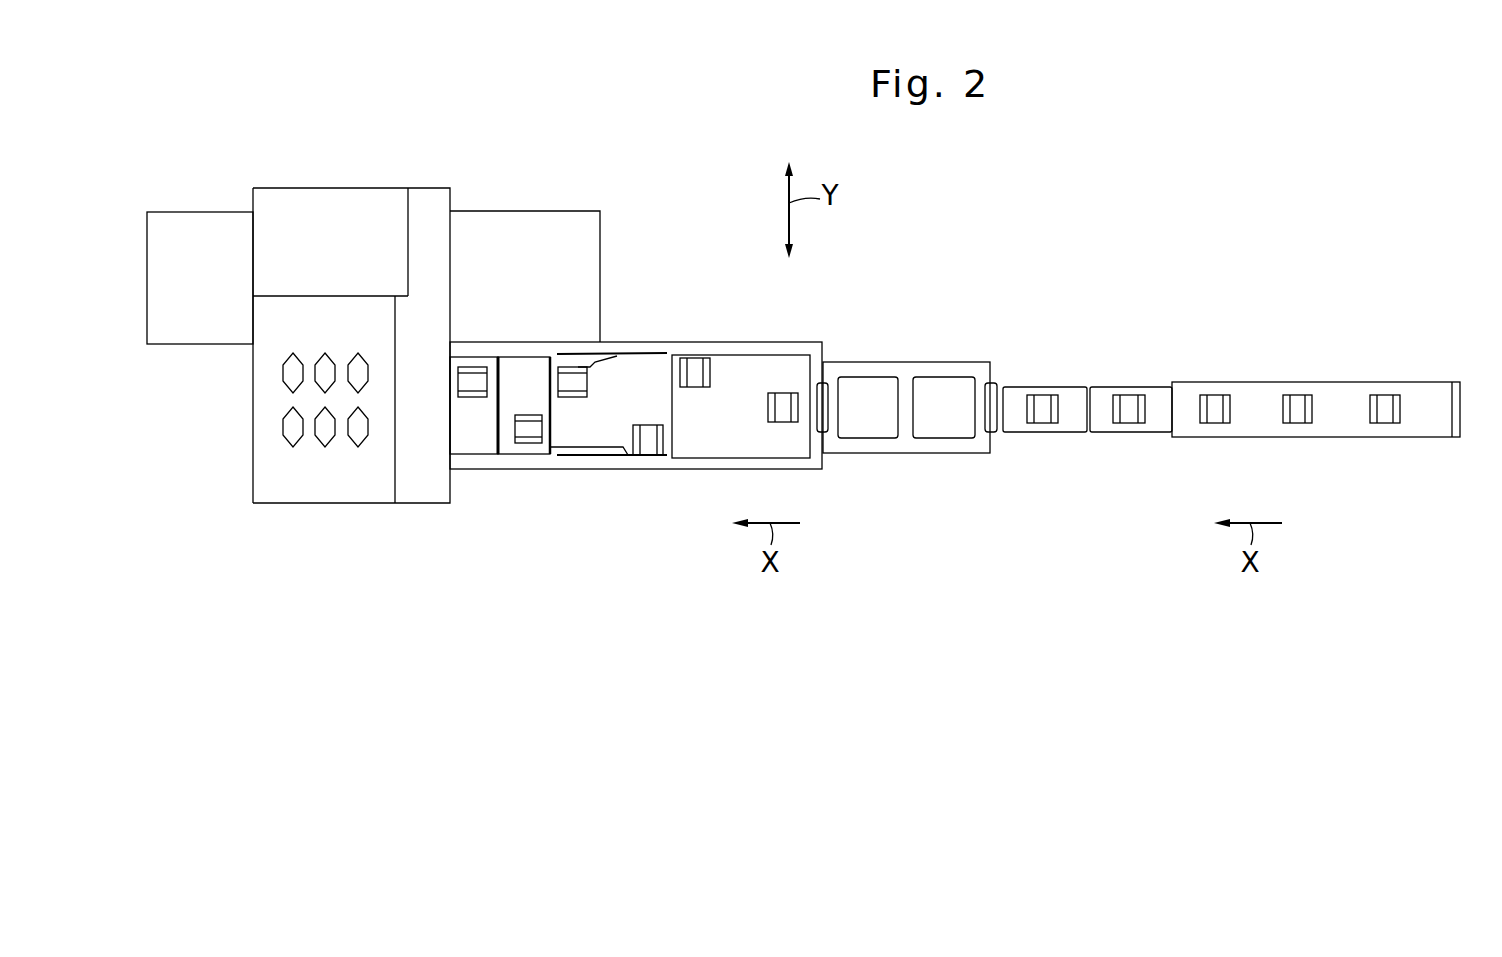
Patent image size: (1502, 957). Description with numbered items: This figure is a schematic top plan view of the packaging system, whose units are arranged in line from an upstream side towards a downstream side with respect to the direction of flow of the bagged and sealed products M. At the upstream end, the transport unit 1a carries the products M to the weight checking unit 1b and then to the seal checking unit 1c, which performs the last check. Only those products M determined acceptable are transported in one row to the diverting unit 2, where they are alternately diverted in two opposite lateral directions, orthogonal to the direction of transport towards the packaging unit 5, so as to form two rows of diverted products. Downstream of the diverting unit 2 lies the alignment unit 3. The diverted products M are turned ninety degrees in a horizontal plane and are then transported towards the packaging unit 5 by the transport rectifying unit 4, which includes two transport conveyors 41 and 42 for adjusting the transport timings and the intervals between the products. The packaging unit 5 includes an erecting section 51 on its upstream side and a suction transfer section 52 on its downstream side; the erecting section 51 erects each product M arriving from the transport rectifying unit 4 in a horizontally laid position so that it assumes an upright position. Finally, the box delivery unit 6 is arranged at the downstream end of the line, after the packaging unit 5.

The transport unit 1a is at (1278, 356).
The weight checking unit 1b is at (1120, 358).
The seal checking unit 1c is at (898, 352).
The diverting unit 2 is at (766, 334).
The alignment unit 3 is at (641, 333).
The transport rectifying unit 4 is at (500, 478).
The transport conveyor 41 is at (523, 448).
The transport conveyor 42 is at (473, 440).
The packaging unit 5 is at (351, 403).
The erecting section 51 is at (430, 492).
The suction transfer section 52 is at (330, 382).
The box delivery unit 6 is at (478, 203).
The bagged and sealed products M is at (287, 382).